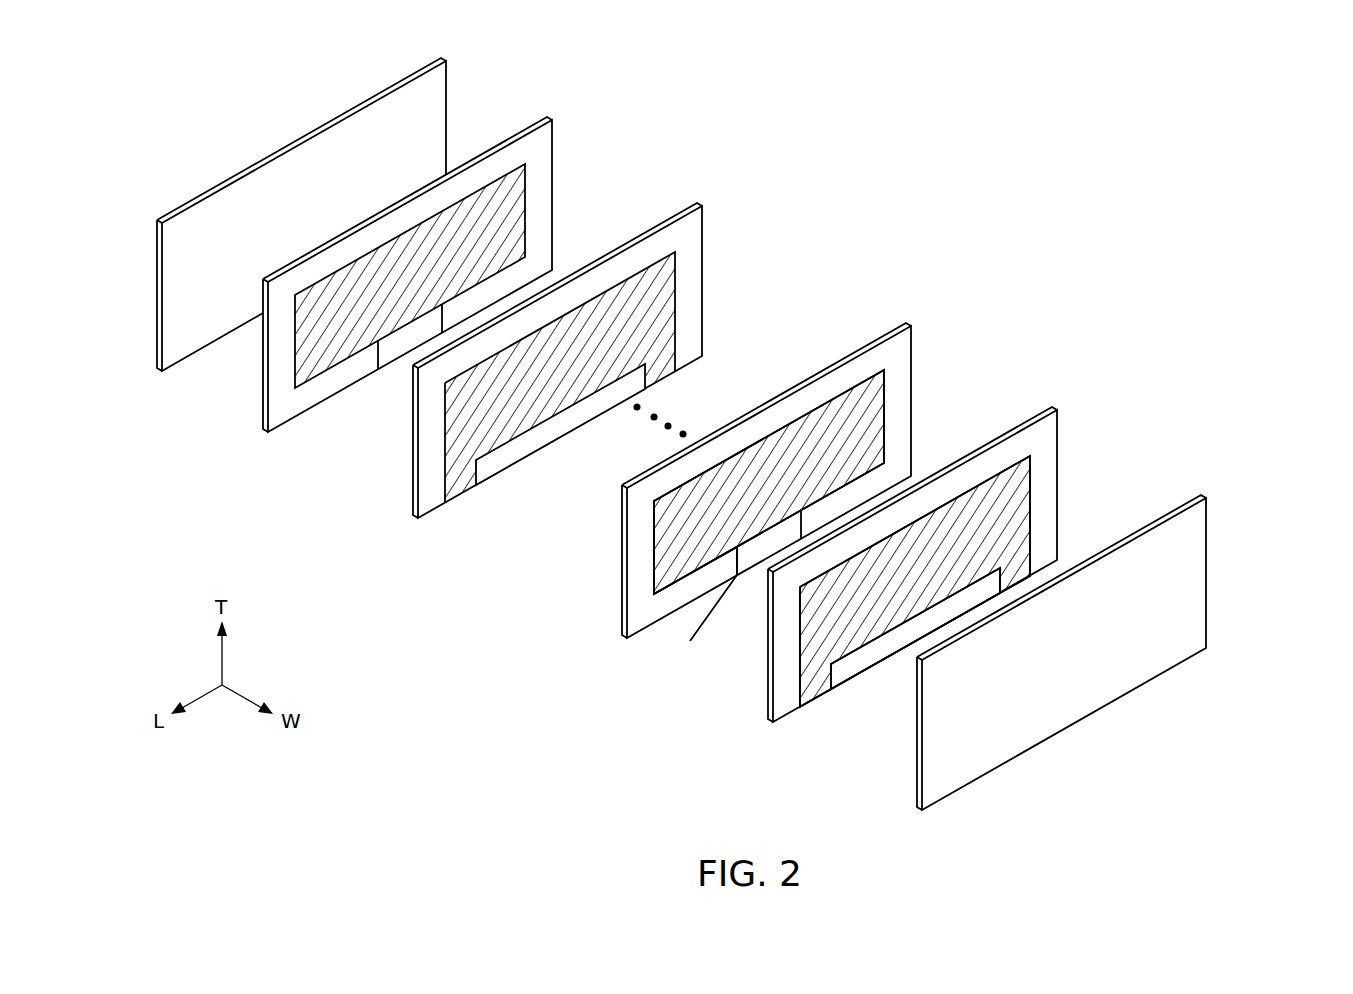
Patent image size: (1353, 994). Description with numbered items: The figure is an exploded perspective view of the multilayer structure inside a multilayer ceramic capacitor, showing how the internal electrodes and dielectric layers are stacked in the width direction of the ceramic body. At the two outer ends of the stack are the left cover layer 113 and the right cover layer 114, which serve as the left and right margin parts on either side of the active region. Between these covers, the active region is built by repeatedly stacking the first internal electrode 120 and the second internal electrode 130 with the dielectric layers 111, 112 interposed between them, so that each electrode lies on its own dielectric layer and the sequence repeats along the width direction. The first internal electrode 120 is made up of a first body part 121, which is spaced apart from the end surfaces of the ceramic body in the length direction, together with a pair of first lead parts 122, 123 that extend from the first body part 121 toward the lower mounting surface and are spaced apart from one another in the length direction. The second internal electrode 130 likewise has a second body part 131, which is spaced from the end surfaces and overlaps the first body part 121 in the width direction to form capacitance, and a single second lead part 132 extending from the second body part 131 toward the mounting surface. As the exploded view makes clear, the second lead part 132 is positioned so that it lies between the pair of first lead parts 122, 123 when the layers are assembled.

The dielectric layer 111 is at (697, 248).
The dielectric layer 112 is at (547, 155).
The left cover layer 113 is at (1198, 564).
The right cover layer 114 is at (440, 107).
The first internal electrode 120 is at (525, 437).
The first body part 121 is at (875, 628).
The first lead part 122 is at (820, 687).
The first lead part 123 is at (1018, 577).
The second internal electrode 130 is at (342, 372).
The second body part 131 is at (687, 567).
The second lead part 132 is at (750, 557).